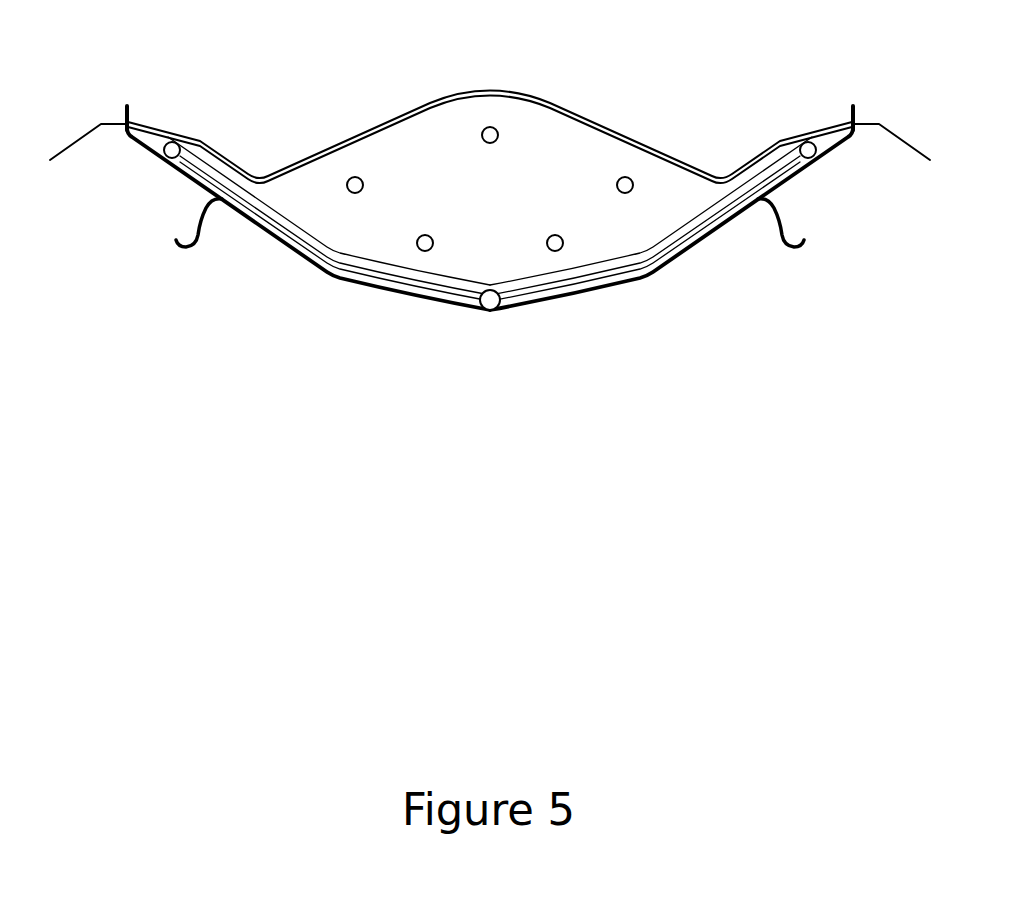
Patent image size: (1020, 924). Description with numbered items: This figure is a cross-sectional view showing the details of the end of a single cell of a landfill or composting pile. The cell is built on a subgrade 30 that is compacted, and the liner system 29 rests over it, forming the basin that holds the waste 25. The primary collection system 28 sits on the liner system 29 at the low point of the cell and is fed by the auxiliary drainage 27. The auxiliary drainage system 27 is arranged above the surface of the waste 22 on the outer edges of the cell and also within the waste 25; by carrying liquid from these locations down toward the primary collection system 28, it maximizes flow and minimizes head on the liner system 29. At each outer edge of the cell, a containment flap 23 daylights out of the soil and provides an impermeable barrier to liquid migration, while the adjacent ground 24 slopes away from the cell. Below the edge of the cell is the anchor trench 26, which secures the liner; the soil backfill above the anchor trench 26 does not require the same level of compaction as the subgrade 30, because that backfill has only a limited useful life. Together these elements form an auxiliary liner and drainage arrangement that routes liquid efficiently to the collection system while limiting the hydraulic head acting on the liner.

The surface of the waste 22 is at (530, 88).
The containment flap 23 is at (127, 100).
The ground surface 24 is at (90, 128).
The waste 25 is at (490, 219).
The anchor trench 26 is at (193, 253).
The auxiliary drainage system 27 is at (417, 245).
The primary collection system 28 is at (483, 307).
The liner system 29 is at (578, 291).
The subgrade 30 is at (496, 334).